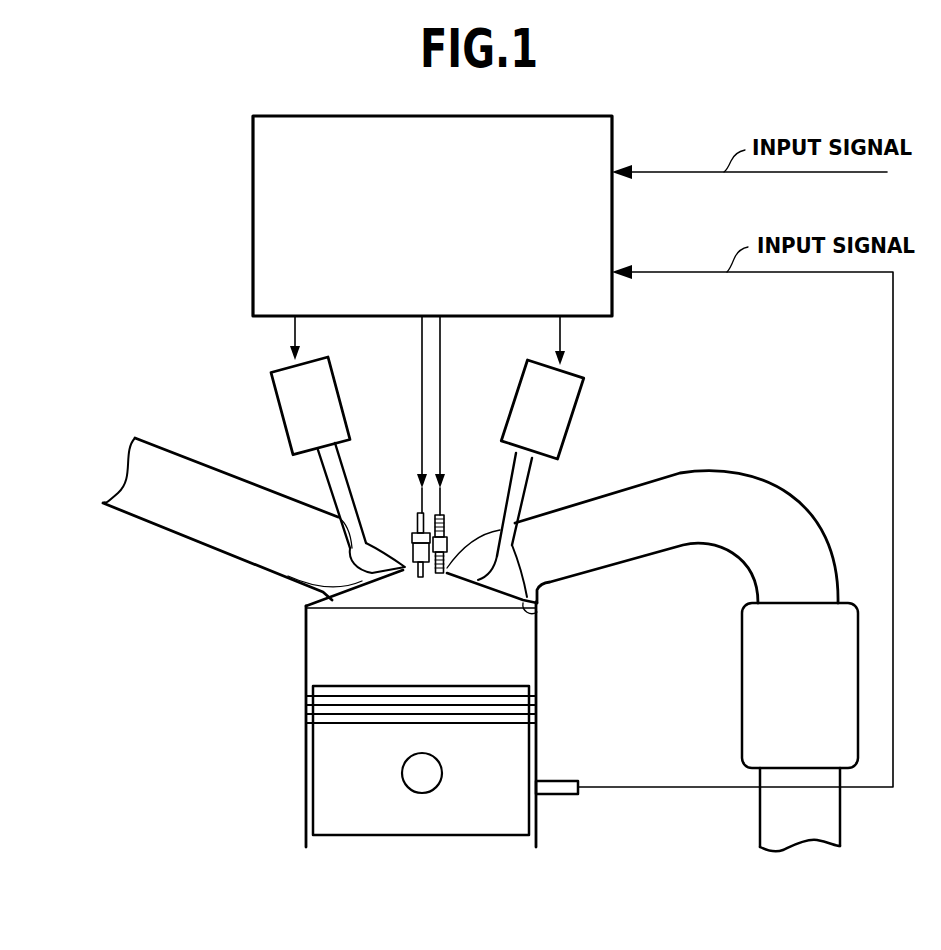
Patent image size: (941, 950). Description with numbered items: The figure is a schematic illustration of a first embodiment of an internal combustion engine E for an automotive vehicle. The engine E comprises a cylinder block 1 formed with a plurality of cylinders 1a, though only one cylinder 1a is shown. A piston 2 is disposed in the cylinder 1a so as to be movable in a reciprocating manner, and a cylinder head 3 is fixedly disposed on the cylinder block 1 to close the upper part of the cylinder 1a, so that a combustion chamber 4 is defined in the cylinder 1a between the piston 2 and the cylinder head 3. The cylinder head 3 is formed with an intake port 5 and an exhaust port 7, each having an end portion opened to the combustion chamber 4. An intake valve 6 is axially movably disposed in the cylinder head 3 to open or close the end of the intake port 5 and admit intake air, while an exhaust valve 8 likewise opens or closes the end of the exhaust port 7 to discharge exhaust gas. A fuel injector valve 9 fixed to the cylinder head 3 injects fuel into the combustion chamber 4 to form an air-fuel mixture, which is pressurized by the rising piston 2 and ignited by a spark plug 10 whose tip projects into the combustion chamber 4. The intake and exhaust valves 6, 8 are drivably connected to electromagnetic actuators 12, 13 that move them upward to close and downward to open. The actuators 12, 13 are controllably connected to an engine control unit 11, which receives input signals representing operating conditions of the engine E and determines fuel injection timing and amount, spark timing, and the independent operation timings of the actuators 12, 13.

The internal combustion engine E is at (138, 341).
The cylinder block 1 is at (234, 713).
The cylinder 1a is at (533, 840).
The piston 2 is at (427, 823).
The cylinder head 3 is at (530, 612).
The combustion chamber 4 is at (323, 648).
The intake port 5 is at (190, 523).
The intake valve 6 is at (348, 575).
The exhaust port 7 is at (605, 543).
The exhaust valve 8 is at (500, 580).
The fuel injector valve 9 is at (405, 530).
The spark plug 10 is at (448, 535).
The engine control unit 11 is at (252, 195).
The electromagnetic actuator 12 is at (277, 410).
The electromagnetic actuator 13 is at (575, 417).